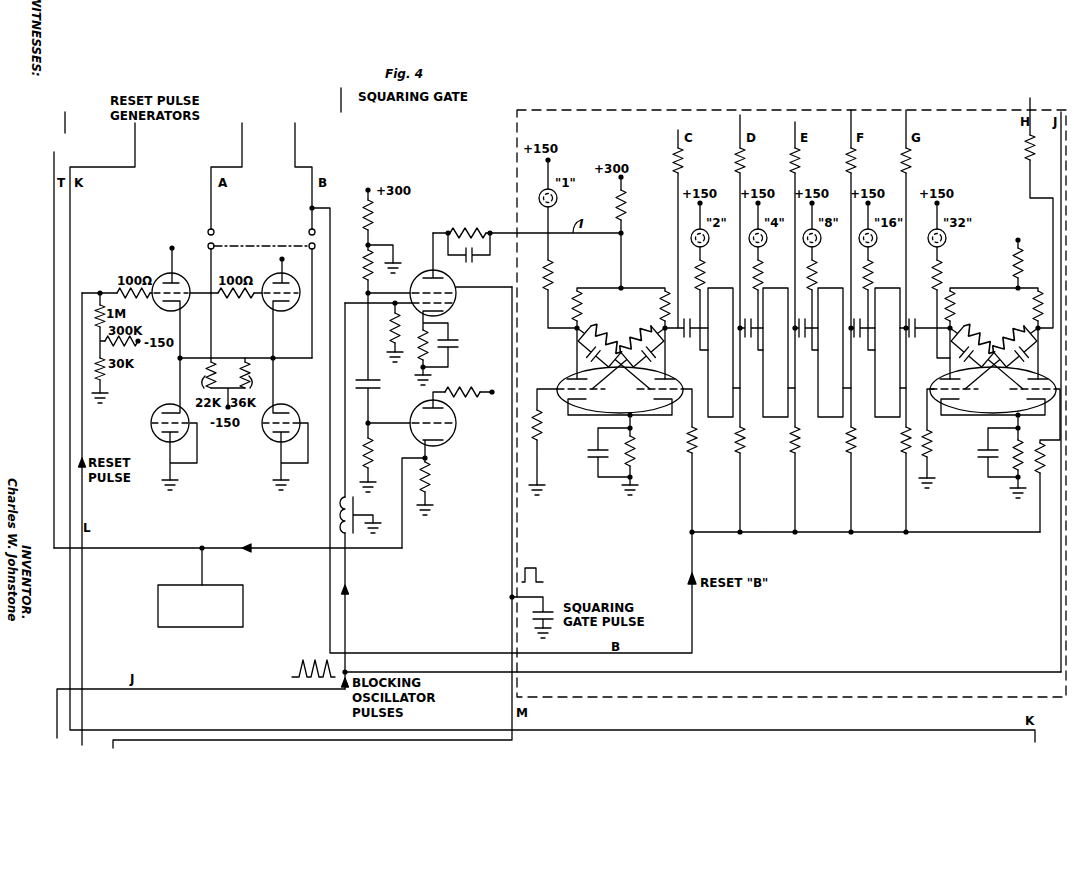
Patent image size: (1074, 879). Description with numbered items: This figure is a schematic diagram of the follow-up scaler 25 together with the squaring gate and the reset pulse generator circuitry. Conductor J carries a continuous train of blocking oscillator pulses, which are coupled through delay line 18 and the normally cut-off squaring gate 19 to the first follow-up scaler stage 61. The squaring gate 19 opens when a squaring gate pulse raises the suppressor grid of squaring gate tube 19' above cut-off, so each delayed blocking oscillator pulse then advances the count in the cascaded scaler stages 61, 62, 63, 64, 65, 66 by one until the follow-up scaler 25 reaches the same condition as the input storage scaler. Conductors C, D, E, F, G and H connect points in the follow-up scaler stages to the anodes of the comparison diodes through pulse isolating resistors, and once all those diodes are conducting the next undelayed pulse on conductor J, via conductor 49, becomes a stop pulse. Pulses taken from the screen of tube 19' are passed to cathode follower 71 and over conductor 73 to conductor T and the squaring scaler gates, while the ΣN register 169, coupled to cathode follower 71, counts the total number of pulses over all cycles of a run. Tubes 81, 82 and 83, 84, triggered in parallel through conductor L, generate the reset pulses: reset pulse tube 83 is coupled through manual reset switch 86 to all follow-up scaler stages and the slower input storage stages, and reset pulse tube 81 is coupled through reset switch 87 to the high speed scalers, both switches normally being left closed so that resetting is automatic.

The delay line 18 is at (357, 510).
The squaring gate 19 is at (463, 235).
The squaring gate tube 19' is at (461, 309).
The follow-up scaler 25 is at (641, 110).
The conductor 49 is at (1057, 381).
The first follow-up scaler stage 61 is at (584, 439).
The follow-up scaler stage 62 is at (727, 439).
The follow-up scaler stage 63 is at (784, 439).
The follow-up scaler stage 64 is at (838, 439).
The follow-up scaler stage 65 is at (894, 439).
The follow-up scaler stage 66 is at (975, 439).
The cathode follower 71 is at (456, 428).
The conductor 73 is at (177, 549).
The reset pulse tube 81 is at (174, 274).
The reset pulse generator tube 82 is at (164, 406).
The reset pulse tube 83 is at (289, 266).
The reset pulse generator tube 84 is at (292, 408).
The manual reset switch 86 is at (310, 243).
The reset switch 87 is at (214, 234).
The ΣN register 169 is at (243, 592).